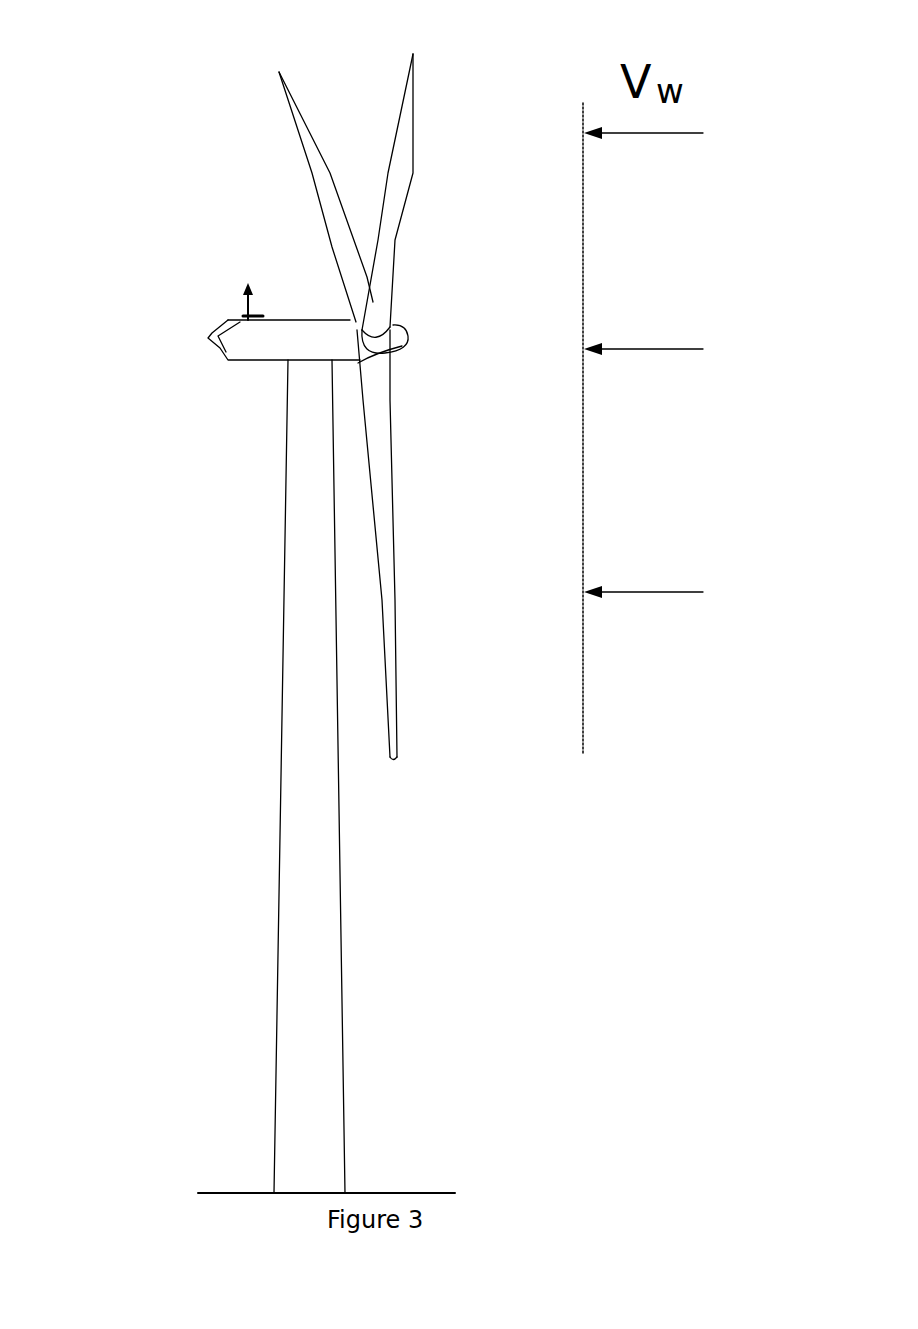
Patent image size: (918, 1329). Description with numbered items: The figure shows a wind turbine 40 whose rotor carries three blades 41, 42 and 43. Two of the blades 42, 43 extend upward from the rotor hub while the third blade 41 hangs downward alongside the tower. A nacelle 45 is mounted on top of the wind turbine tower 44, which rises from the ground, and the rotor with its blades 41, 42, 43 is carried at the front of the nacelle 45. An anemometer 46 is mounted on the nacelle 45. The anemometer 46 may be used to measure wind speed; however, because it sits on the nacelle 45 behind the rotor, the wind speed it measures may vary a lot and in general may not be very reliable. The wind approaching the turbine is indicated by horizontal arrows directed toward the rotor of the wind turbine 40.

The wind turbine 40 is at (176, 136).
The blade 41 is at (373, 402).
The blade 42 is at (388, 230).
The blade 43 is at (338, 238).
The wind turbine tower 44 is at (317, 755).
The nacelle 45 is at (277, 348).
The anemometer 46 is at (212, 291).